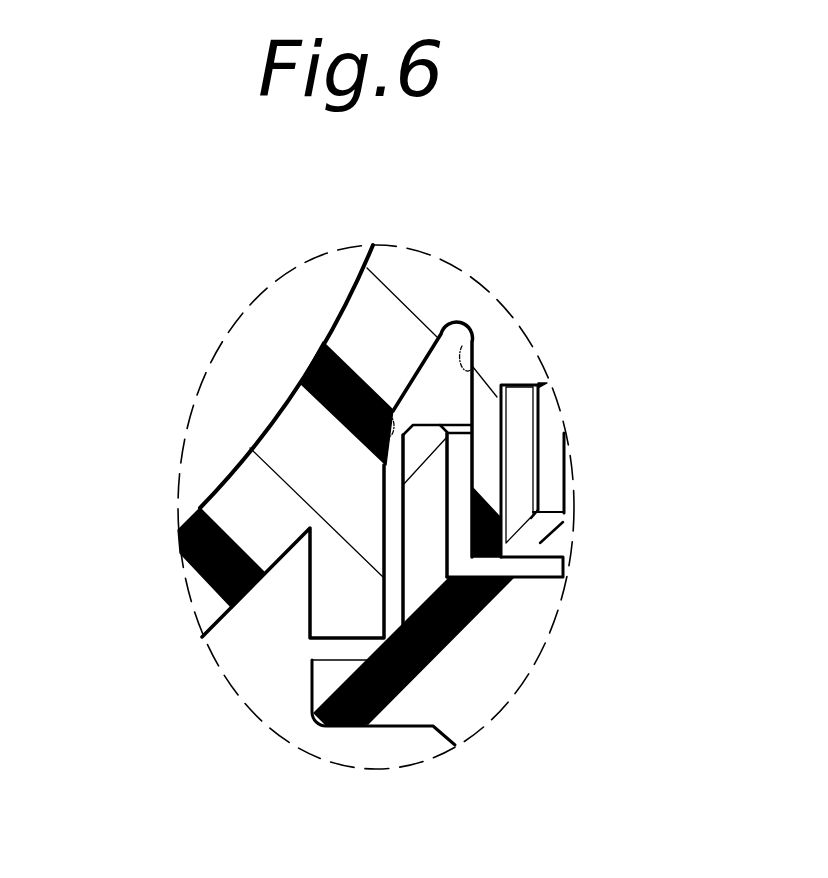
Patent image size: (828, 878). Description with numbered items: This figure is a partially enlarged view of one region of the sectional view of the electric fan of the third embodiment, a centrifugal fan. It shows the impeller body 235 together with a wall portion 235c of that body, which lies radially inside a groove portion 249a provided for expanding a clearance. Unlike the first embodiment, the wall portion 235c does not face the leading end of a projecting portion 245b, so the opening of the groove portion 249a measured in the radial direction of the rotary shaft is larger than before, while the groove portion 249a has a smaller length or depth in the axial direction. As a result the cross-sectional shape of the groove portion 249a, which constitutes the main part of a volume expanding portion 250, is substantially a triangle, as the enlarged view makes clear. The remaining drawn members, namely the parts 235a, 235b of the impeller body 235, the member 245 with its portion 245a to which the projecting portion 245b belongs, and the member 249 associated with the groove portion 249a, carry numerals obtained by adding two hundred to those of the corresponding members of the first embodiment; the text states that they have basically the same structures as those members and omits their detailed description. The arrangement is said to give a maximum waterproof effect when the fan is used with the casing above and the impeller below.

The impeller body 235 is at (299, 395).
The end face of plate 235a is at (344, 345).
The inner step surface of plate 235b is at (385, 440).
The wall portion 235c is at (441, 407).
The bracket 245 is at (398, 716).
The inclined face of bracket 245a is at (433, 689).
The projecting portion 245b is at (427, 483).
The hook 249 is at (452, 337).
The groove portion 249a is at (473, 366).
The volume expanding portion 250 is at (415, 409).